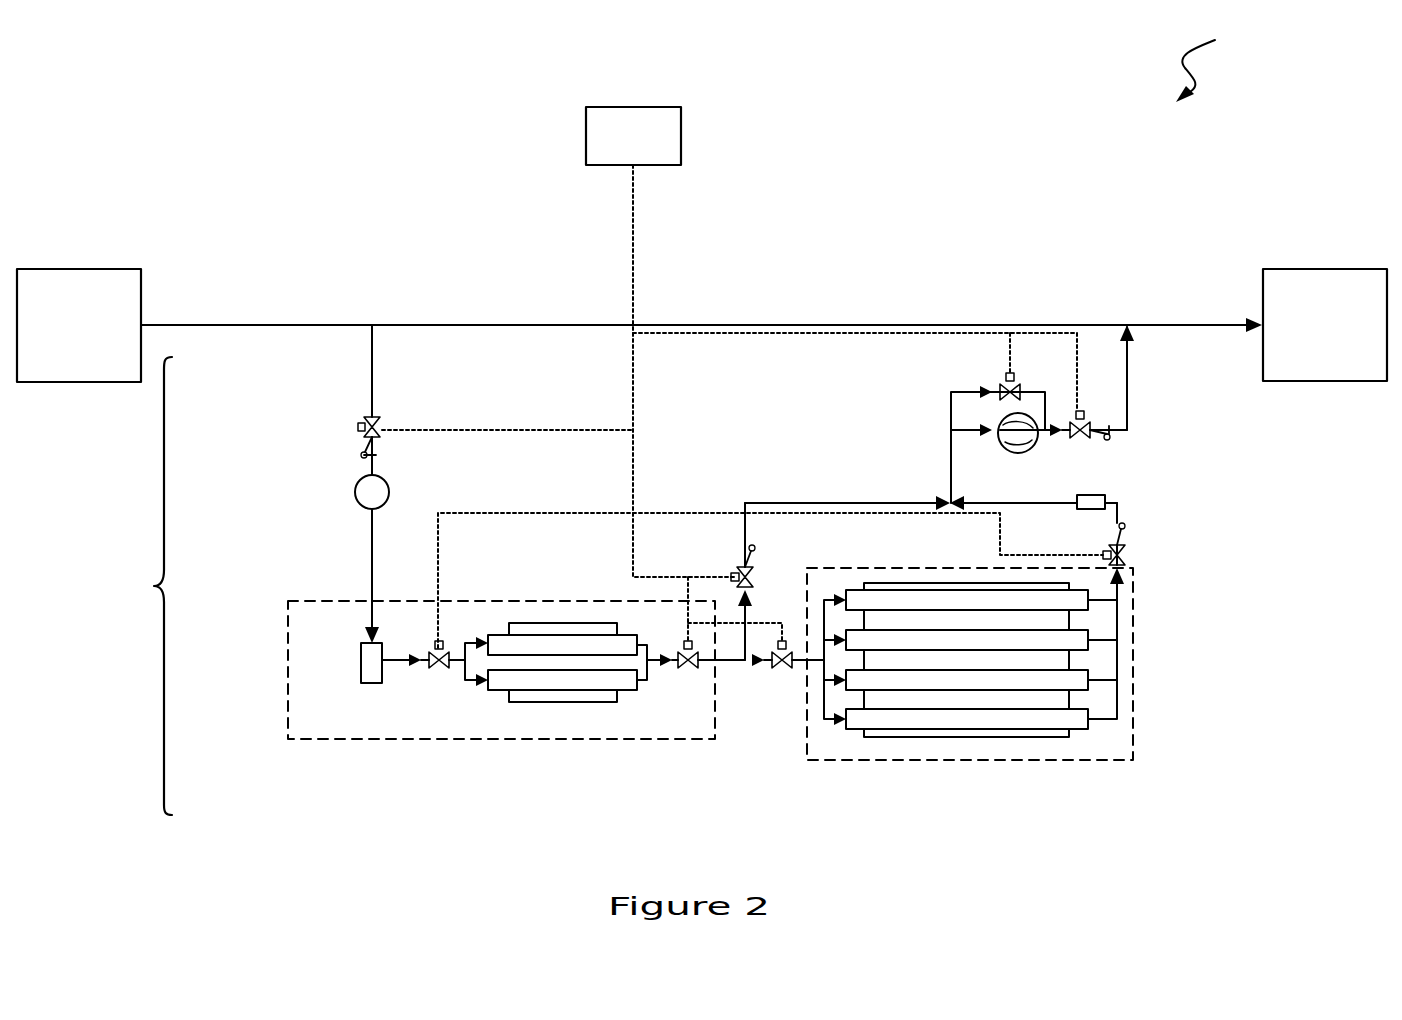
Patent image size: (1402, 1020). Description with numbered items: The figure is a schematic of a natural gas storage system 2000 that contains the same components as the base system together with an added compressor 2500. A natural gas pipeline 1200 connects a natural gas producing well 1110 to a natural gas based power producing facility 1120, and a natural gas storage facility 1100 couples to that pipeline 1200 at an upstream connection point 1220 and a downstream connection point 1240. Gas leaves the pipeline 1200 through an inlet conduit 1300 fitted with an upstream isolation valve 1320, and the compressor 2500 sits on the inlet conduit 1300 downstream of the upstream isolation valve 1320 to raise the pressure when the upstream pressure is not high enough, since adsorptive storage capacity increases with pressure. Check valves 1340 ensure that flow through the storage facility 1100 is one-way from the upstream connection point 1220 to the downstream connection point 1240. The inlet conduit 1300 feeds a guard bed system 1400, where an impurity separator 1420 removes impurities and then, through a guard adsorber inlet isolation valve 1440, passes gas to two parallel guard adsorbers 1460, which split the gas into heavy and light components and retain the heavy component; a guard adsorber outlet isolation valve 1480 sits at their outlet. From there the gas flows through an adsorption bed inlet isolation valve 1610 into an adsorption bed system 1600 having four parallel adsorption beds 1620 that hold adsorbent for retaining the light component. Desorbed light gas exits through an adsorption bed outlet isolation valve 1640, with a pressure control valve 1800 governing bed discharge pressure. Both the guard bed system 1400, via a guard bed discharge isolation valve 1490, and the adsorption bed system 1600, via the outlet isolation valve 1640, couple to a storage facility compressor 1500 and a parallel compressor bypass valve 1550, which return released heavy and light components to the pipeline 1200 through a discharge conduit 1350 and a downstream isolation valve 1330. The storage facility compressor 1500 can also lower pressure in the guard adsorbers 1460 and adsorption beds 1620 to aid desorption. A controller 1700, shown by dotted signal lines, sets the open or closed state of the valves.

The system 2000 is at (1233, 64).
The controller 1700 is at (633, 136).
The natural gas producing well 1110 is at (79, 325).
The natural gas based power producing facility 1120 is at (1325, 325).
The natural gas pipeline 1200 is at (753, 322).
The upstream connection point 1220 is at (383, 319).
The downstream connection point 1240 is at (1125, 317).
The inlet conduit 1300 is at (372, 362).
The upstream isolation valve 1320 is at (378, 420).
The check valves 1340 is at (363, 450).
The compressor 2500 is at (388, 485).
The natural gas storage facility 1100 is at (126, 586).
The guard bed system 1400 is at (366, 744).
The impurity separator 1420 is at (375, 684).
The guard adsorber inlet isolation valve 1440 is at (433, 668).
The guard adsorbers 1460 is at (583, 635).
The guard adsorber outlet isolation valve 1480 is at (693, 668).
The guard bed discharge isolation valve 1490 is at (735, 572).
The adsorption bed inlet isolation valve 1610 is at (788, 668).
The adsorption bed system 1600 is at (876, 762).
The adsorption beds 1620 is at (945, 680).
The adsorption bed outlet isolation valve 1640 is at (1126, 560).
The pressure control valve 1800 is at (1102, 494).
The storage facility compressor 1500 is at (1030, 450).
The compressor bypass valve 1550 is at (1003, 386).
The downstream isolation valve 1330 is at (1088, 440).
The discharge conduit 1350 is at (1128, 385).